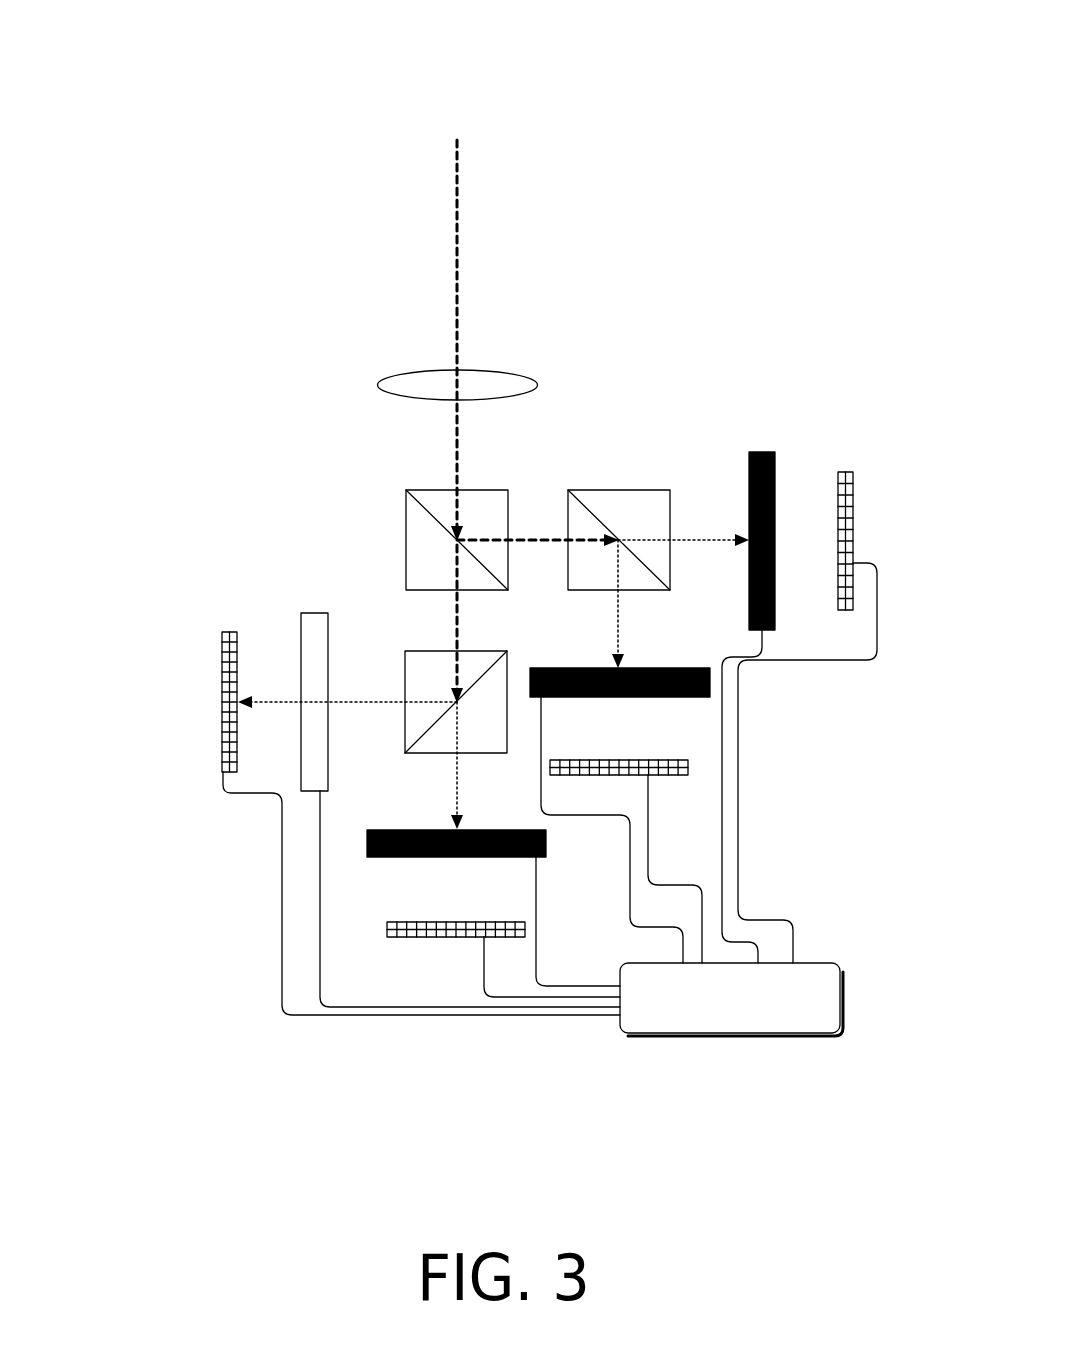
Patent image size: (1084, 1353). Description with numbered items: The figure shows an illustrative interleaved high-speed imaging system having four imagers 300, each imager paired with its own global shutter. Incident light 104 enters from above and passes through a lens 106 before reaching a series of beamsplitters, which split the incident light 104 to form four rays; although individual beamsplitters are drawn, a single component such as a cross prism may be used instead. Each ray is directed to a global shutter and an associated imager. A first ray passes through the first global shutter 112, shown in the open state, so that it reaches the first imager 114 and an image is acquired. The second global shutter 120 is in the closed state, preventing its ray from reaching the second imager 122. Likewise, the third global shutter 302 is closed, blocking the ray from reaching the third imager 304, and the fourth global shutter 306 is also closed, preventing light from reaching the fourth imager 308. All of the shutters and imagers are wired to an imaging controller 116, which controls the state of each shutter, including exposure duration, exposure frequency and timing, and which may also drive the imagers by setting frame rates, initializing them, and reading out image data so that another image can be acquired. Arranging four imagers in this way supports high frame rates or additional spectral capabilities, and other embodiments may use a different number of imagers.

The imaging system having four imagers 300 is at (809, 30).
The incident light 104 is at (452, 236).
The lens 106 is at (400, 373).
The first imager 114 is at (230, 632).
The first global shutter 112 is at (315, 791).
The second global shutter 120 is at (762, 452).
The second imager 122 is at (846, 472).
The fourth global shutter 306 is at (710, 682).
The fourth imager 308 is at (672, 775).
The third global shutter 302 is at (382, 860).
The third imager 304 is at (458, 937).
The imaging controller 116 is at (731, 999).